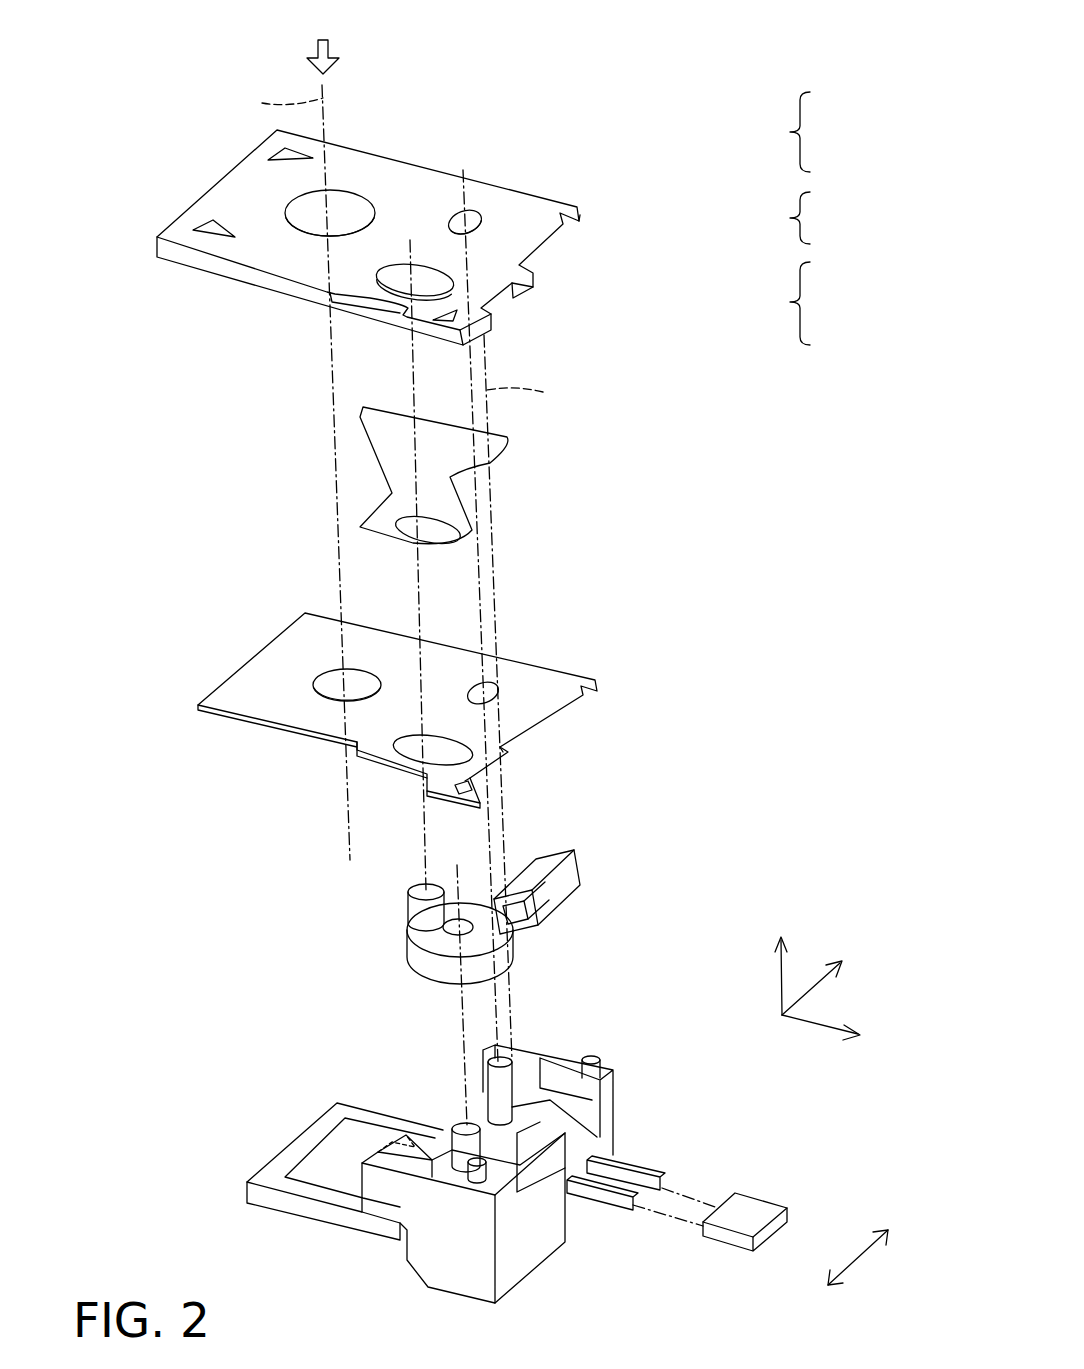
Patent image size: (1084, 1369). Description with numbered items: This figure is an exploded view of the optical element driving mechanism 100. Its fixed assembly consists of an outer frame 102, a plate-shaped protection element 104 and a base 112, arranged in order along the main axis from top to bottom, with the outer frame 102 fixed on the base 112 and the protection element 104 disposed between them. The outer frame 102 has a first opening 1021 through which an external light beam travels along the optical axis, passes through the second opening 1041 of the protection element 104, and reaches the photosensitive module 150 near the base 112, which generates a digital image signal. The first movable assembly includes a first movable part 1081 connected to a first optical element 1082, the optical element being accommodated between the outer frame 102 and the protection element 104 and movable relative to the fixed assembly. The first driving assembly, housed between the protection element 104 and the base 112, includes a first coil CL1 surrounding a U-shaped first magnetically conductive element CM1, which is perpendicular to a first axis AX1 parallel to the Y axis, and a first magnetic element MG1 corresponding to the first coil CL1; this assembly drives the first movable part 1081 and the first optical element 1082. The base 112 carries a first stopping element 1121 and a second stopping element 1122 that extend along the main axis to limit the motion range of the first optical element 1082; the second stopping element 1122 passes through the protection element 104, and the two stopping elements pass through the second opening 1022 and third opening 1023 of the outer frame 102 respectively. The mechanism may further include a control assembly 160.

The optical element driving mechanism 100 is at (174, 22).
The outer frame 102 is at (515, 203).
The first opening 1021 is at (350, 190).
The second opening 1022 is at (400, 321).
The third opening 1023 is at (470, 212).
The protection element 104 is at (543, 675).
The second opening 1041 is at (323, 667).
The first movable part 1081 is at (418, 908).
The first optical element 1082 is at (435, 437).
The base 112 is at (608, 1117).
The first stopping element 1121 is at (407, 1140).
The second stopping element 1122 is at (487, 1068).
The photosensitive module 150 is at (292, 1152).
The control assembly 160 is at (752, 1212).
The first magnetic element MG1 is at (404, 943).
The first coil CL1 is at (560, 907).
The first magnetically conductive element CM1 is at (553, 850).
The first axis AX1 is at (876, 1261).